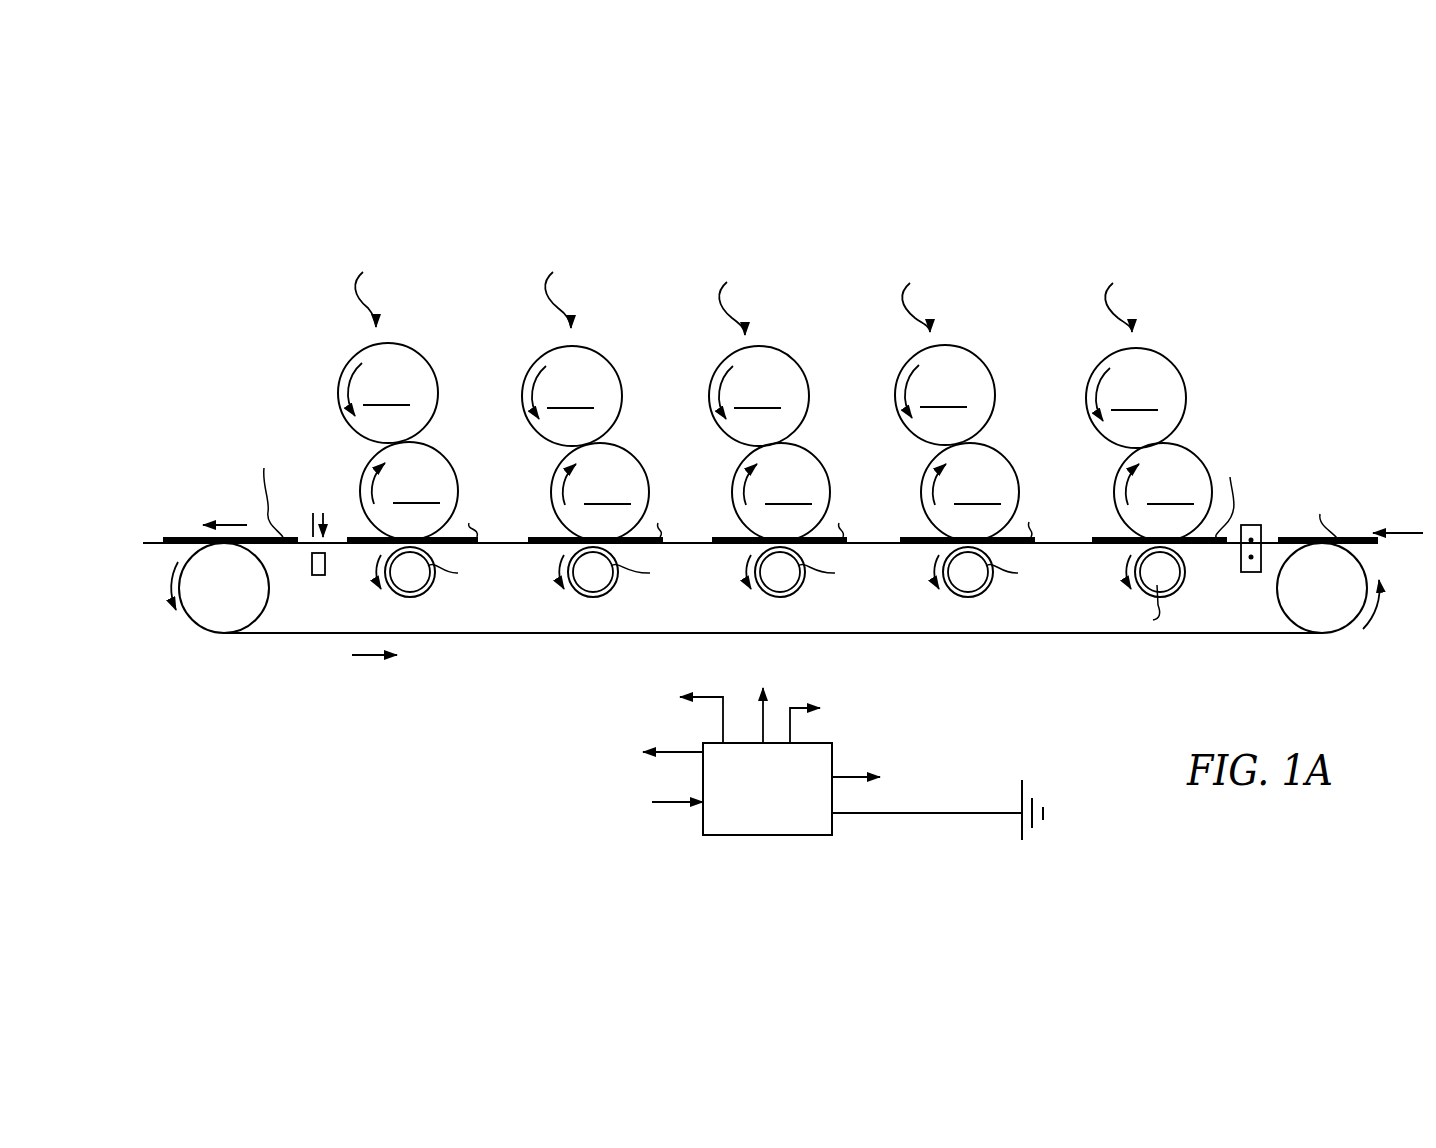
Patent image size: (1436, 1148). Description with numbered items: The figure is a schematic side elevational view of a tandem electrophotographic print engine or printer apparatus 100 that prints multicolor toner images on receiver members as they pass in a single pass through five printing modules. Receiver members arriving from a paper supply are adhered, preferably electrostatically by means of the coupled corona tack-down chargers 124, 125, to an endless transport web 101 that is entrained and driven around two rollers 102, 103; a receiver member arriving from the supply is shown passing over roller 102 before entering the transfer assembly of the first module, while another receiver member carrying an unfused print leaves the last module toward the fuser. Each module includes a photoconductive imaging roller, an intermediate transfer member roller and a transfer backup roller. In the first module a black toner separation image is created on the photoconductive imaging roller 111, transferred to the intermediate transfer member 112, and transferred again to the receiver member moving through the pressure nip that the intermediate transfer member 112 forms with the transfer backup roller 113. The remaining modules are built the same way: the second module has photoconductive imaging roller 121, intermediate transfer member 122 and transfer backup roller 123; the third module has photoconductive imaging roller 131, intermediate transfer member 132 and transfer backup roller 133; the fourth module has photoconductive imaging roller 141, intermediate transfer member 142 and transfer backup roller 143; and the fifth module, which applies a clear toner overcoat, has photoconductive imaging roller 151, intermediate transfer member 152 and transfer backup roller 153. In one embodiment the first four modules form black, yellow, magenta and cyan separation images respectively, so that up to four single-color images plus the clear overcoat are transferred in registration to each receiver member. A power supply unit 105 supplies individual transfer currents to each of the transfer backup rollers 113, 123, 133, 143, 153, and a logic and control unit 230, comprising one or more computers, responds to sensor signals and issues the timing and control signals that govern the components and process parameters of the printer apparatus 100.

The electrostatographic printer apparatus 100 is at (1040, 237).
The endless transport web 101 is at (1067, 635).
The roller 102 is at (1360, 570).
The roller 103 is at (218, 620).
The power supply unit 105 is at (832, 757).
The photoconductive imaging roller 111 is at (1166, 368).
The intermediate transfer member 112 is at (1195, 462).
The transfer backup roller 113 is at (1168, 577).
The photoconductive imaging roller 121 is at (975, 366).
The intermediate transfer member 122 is at (999, 461).
The transfer backup roller 123 is at (982, 583).
The corona tack-down charger 124 is at (1255, 526).
The corona tack-down charger 125 is at (1261, 565).
The photoconductive imaging roller 131 is at (789, 366).
The intermediate transfer member 132 is at (810, 461).
The transfer backup roller 133 is at (794, 583).
The photoconductive imaging roller 141 is at (607, 377).
The intermediate transfer member 142 is at (629, 466).
The transfer backup roller 143 is at (607, 583).
The photoconductive imaging roller 151 is at (417, 363).
The intermediate transfer member 152 is at (438, 460).
The transfer backup roller 153 is at (420, 583).
The logic and control unit 230 is at (570, 814).